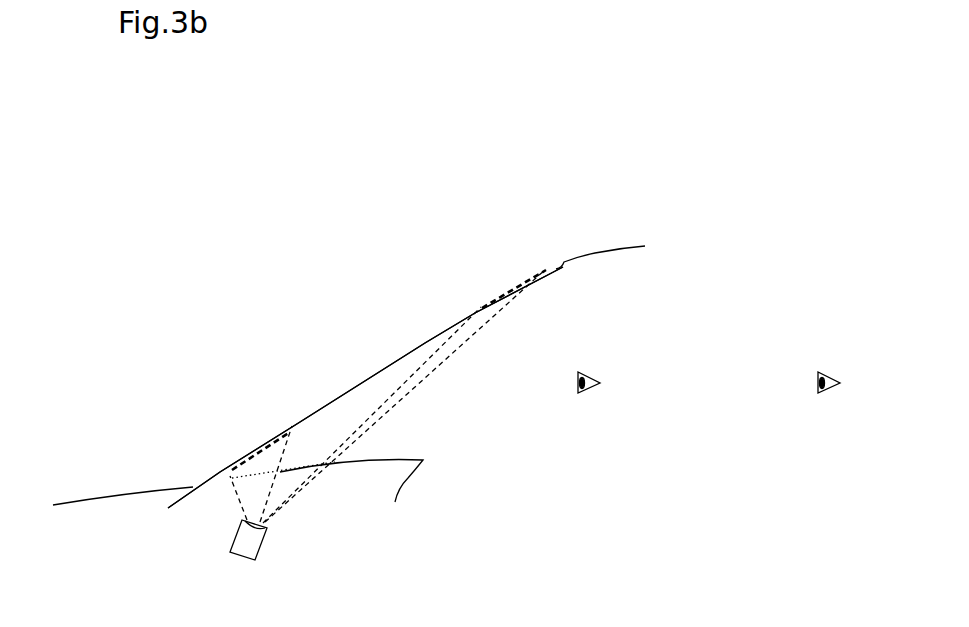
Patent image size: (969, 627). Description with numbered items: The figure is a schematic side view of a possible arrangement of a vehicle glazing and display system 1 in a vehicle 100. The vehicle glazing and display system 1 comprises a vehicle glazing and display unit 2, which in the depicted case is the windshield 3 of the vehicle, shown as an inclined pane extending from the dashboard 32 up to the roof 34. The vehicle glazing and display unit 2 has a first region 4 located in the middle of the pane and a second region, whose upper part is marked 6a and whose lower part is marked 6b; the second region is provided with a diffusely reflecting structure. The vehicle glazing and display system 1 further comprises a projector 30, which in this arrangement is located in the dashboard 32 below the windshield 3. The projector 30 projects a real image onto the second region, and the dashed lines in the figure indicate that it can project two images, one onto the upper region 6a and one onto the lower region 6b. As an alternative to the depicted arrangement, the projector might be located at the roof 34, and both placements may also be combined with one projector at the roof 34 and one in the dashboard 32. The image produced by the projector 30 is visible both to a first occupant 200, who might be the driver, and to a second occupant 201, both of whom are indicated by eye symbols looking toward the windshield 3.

The vehicle 100 is at (181, 236).
The vehicle glazing and display system 1 is at (410, 286).
The vehicle glazing and display unit 2 is at (322, 358).
The windshield 3 is at (218, 472).
The first region 4 is at (472, 307).
The second region (upper region) 6a is at (549, 267).
The second region (lower region) 6b is at (291, 427).
The projector 30 is at (265, 543).
The dashboard 32 is at (412, 478).
The roof 34 is at (615, 248).
The first occupant 200 is at (585, 393).
The second occupant 201 is at (825, 393).